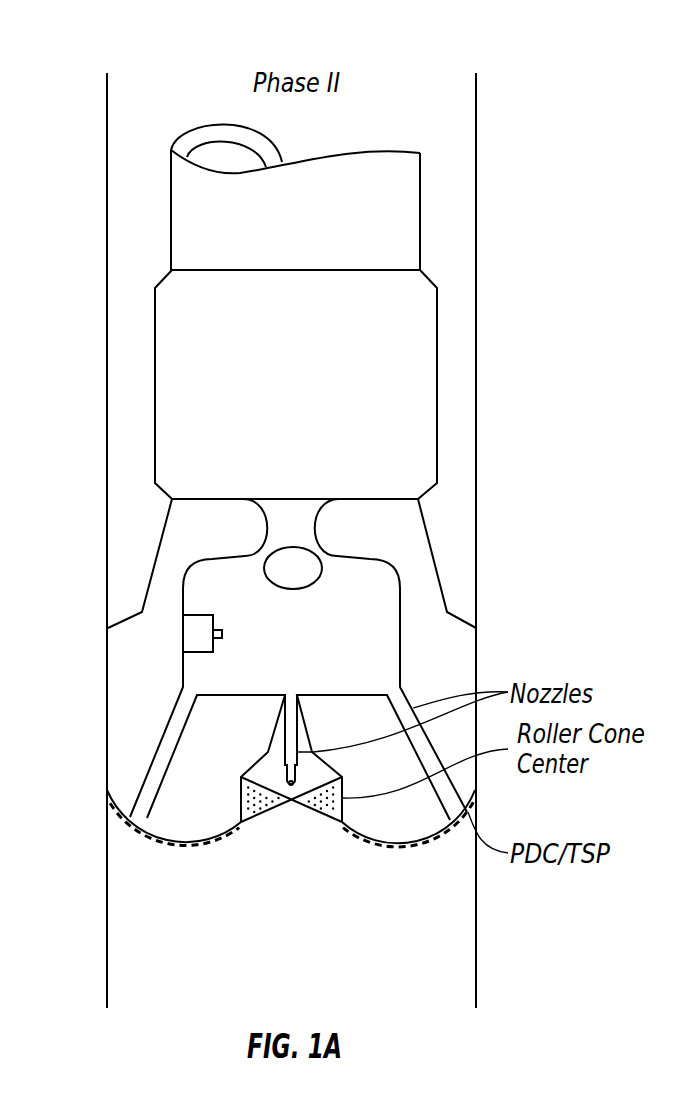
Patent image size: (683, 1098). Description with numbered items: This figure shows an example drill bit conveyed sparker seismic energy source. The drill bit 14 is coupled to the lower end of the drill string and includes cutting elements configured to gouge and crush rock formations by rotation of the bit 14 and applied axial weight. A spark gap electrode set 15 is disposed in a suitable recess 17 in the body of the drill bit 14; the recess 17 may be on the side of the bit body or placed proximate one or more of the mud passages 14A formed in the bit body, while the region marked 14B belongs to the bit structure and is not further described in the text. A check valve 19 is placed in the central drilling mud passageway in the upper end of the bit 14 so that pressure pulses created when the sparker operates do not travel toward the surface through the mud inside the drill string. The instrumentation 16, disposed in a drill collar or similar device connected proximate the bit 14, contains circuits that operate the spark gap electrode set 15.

The drill bit 14 is at (476, 630).
The mud passages 14A is at (468, 803).
The PDC/TSP cutter blade 14B is at (198, 845).
The spark gap electrode set 15 is at (222, 634).
The signal acquisition and processing sub 16 is at (437, 387).
The recess 17 is at (182, 633).
The check valve 19 is at (263, 570).